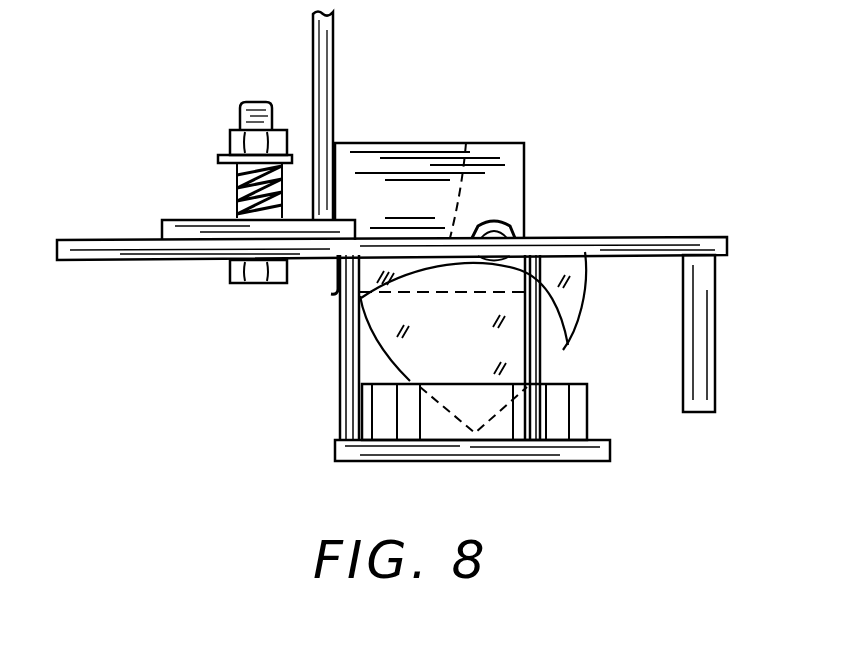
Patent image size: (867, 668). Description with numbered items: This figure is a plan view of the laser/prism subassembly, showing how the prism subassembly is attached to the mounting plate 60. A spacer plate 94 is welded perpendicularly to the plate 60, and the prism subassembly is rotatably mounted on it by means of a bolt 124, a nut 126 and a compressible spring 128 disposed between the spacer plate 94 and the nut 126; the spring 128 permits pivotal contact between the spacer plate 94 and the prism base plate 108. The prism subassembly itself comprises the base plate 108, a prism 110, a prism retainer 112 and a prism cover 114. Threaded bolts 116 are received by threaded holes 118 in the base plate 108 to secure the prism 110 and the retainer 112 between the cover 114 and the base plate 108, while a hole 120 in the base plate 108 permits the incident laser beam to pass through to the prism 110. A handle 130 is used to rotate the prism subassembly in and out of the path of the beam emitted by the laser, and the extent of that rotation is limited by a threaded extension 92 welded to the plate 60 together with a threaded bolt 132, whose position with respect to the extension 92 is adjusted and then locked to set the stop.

The laser/prism subassembly mounting plate 60 is at (335, 66).
The threaded extension 92 is at (508, 143).
The spacer plate 94 is at (200, 219).
The prism base plate 108 is at (677, 237).
The prism 110 is at (472, 349).
The prism retainer 112 is at (587, 406).
The prism cover 114 is at (573, 461).
The threaded bolts 116 is at (340, 362).
The threaded holes 118 is at (318, 260).
The hole 120 is at (466, 137).
The bolt 124 is at (232, 281).
The nut 126 is at (229, 147).
The compressible spring 128 is at (236, 194).
The handle 130 is at (715, 353).
The threaded bolt 132 is at (500, 233).